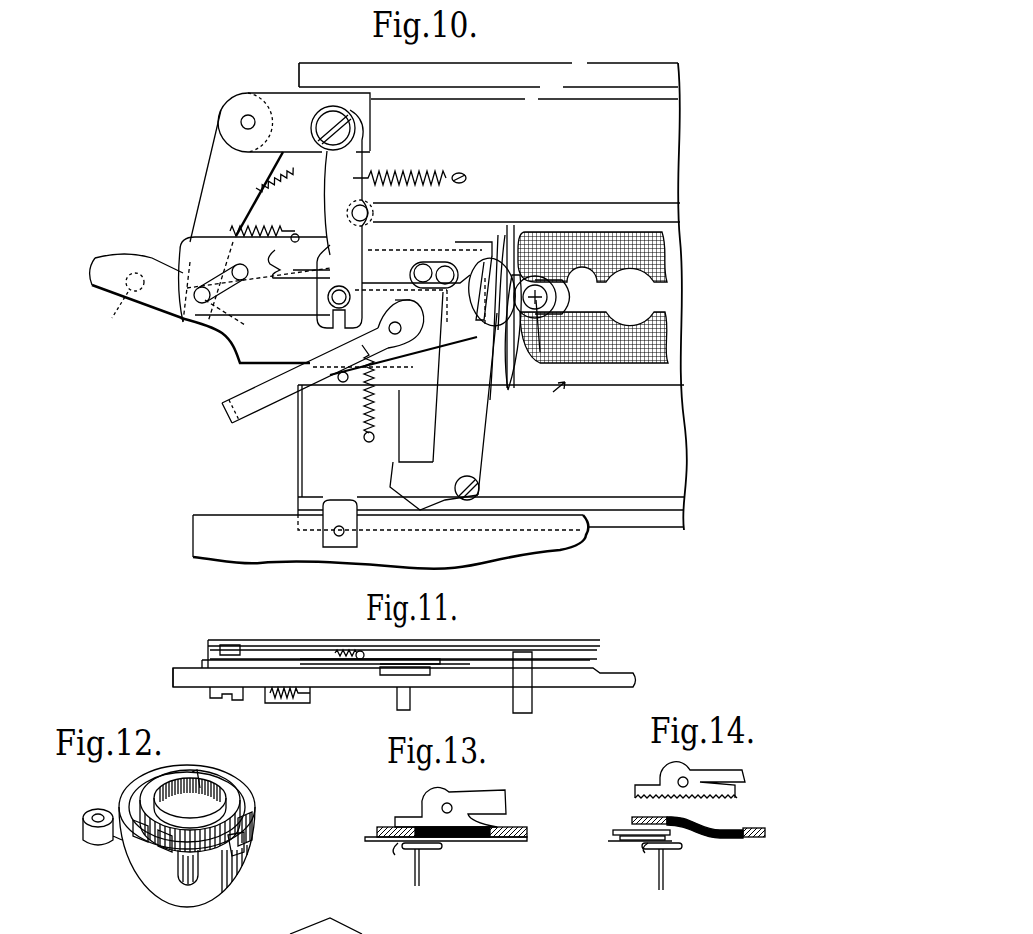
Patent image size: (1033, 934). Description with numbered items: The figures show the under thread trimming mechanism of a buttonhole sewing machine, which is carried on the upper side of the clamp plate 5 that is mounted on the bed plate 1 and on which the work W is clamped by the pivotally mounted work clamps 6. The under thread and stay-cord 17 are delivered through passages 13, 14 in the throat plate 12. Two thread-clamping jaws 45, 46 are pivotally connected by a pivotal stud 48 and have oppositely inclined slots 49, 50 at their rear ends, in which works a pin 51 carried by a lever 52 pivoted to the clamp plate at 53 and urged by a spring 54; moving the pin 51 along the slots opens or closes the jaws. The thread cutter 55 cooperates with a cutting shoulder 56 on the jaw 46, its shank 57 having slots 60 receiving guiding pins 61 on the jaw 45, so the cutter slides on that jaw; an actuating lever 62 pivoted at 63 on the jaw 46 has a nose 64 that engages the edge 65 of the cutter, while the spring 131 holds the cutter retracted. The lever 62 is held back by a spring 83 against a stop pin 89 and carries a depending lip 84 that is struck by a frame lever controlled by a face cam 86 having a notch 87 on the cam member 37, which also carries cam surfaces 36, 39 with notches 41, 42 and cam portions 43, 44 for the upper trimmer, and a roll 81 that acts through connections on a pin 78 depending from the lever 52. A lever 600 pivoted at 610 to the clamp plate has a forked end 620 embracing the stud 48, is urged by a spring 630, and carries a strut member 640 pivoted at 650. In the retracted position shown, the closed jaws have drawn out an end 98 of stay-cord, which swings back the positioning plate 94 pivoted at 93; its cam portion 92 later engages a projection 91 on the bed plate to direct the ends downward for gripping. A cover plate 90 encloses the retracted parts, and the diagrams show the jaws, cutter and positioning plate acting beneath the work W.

In FIG. 10, the bed plate 1 is at (205, 531).
In FIG. 10, the clamp plate 5 is at (308, 445).
In FIG. 11, the clamp plate 5 is at (572, 681).
In FIG. 13, the work clamp 6 is at (408, 821).
In FIG. 14, the work clamp 6 is at (646, 794).
In FIG. 10, the throat plate 12 is at (570, 302).
In FIG. 13, the throat plate 12 is at (440, 847).
In FIG. 14, the throat plate 12 is at (680, 848).
In FIG. 10, the passage 13 is at (548, 376).
In FIG. 10, the passage 14 is at (549, 294).
In FIG. 10, the stay-cord 17 is at (518, 283).
In FIG. 13, the stay-cord 17 is at (414, 877).
In FIG. 14, the stay-cord 17 is at (664, 875).
In FIG. 12, the cam surface 36 is at (250, 796).
In FIG. 12, the cam member 37 is at (248, 843).
In FIG. 12, the cam surface 39 is at (232, 791).
In FIG. 12, the notch 41 is at (140, 836).
In FIG. 12, the notch 42 is at (196, 773).
In FIG. 12, the cam portion 43 is at (254, 822).
In FIG. 12, the cam portion 44 is at (184, 884).
In FIG. 10, the thread-clamping jaw 45 is at (501, 262).
In FIG. 11, the thread-clamping jaw 45 is at (432, 657).
In FIG. 14, the thread-clamping jaw 45 is at (615, 830).
In FIG. 10, the thread-clamping jaw 46 is at (480, 338).
In FIG. 11, the thread-clamping jaw 46 is at (462, 661).
In FIG. 14, the thread-clamping jaw 46 is at (628, 842).
In FIG. 10, the pivotal stud 48 is at (338, 326).
In FIG. 10, the inclined slot 49 is at (217, 273).
In FIG. 10, the inclined slot 50 is at (232, 339).
In FIG. 10, the pin 51 is at (197, 303).
In FIG. 10, the lever 52 is at (215, 151).
In FIG. 11, the lever 52 is at (368, 671).
In FIG. 10, the pivot 53 is at (243, 119).
In FIG. 11, the pivot 53 is at (225, 690).
In FIG. 10, the spring 54 is at (282, 166).
In FIG. 11, the spring 54 is at (282, 697).
In FIG. 10, the thread cutter 55 is at (480, 256).
In FIG. 10, the cutting shoulder 56 is at (510, 381).
In FIG. 14, the cutting shoulder 56 is at (696, 825).
In FIG. 10, the shank 57 is at (375, 263).
In FIG. 11, the shank 57 is at (358, 651).
In FIG. 10, the slot 60 is at (277, 257).
In FIG. 10, the guiding pin 61 is at (299, 241).
In FIG. 10, the actuating lever 62 is at (290, 391).
In FIG. 11, the actuating lever 62 is at (495, 659).
In FIG. 10, the pivot 63 is at (398, 353).
In FIG. 10, the nose 64 is at (405, 304).
In FIG. 10, the edge 65 is at (400, 333).
In FIG. 10, the pin 78 is at (133, 295).
In FIG. 11, the pin 78 is at (406, 707).
In FIG. 12, the roll 81 is at (88, 813).
In FIG. 10, the spring 83 is at (376, 431).
In FIG. 10, the depending lip 84 is at (224, 413).
In FIG. 11, the depending lip 84 is at (512, 704).
In FIG. 12, the face cam 86 is at (172, 841).
In FIG. 12, the notch 87 is at (152, 794).
In FIG. 10, the stop pin 89 is at (342, 384).
In FIG. 11, the cover plate 90 is at (210, 641).
In FIG. 10, the projection 91 is at (322, 507).
In FIG. 10, the cam portion 92 is at (413, 484).
In FIG. 10, the pivot 93 is at (480, 481).
In FIG. 10, the positioning plate 94 is at (498, 401).
In FIG. 13, the positioning plate 94 is at (366, 836).
In FIG. 14, the positioning plate 94 is at (612, 843).
In FIG. 10, the stay-cord end 98 is at (512, 290).
In FIG. 13, the stay-cord end 98 is at (395, 849).
In FIG. 14, the stay-cord end 98 is at (650, 853).
In FIG. 10, the spring 131 is at (262, 229).
In FIG. 11, the spring 131 is at (338, 655).
In FIG. 10, the lever 600 is at (350, 226).
In FIG. 11, the lever 600 is at (268, 653).
In FIG. 10, the pivot 610 is at (352, 129).
In FIG. 11, the pivot 610 is at (226, 643).
In FIG. 10, the forked end 620 is at (316, 298).
In FIG. 10, the spring 630 is at (403, 173).
In FIG. 10, the strut member 640 is at (615, 206).
In FIG. 10, the pivot 650 is at (352, 207).
In FIG. 13, the work W is at (518, 827).
In FIG. 14, the work W is at (752, 828).